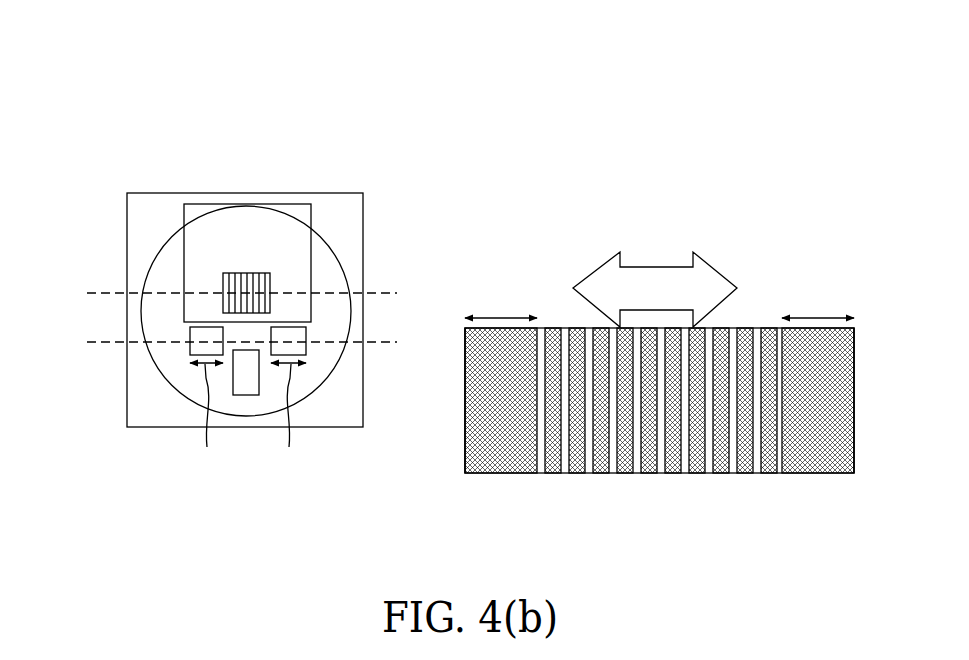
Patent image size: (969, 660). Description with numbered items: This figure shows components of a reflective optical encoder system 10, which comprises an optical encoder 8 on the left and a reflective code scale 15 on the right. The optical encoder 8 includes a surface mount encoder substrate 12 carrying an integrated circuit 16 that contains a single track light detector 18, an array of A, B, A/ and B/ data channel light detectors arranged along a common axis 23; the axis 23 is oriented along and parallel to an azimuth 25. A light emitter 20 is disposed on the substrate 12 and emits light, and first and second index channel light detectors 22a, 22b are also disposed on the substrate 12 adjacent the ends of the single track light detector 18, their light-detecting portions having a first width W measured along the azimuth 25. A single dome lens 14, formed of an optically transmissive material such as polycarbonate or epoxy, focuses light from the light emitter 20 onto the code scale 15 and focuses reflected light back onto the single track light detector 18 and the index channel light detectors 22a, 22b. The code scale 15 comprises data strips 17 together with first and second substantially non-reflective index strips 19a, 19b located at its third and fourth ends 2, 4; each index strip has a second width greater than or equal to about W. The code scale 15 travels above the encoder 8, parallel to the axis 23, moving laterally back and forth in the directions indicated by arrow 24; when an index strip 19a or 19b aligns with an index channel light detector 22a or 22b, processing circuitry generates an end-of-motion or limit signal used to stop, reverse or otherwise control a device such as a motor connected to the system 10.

The optical encoder 8 is at (150, 91).
The reflective optical encoder system 10 is at (138, 481).
The encoder substrate 12 is at (148, 207).
The dome lens 14 is at (340, 287).
The code scale 15 is at (778, 206).
The integrated circuit 16 is at (300, 211).
The data strips 17 is at (533, 487).
The single track light detector 18 is at (228, 286).
The first index strip 19a is at (498, 452).
The second index strip 19b is at (818, 449).
The third end 2 is at (465, 394).
The fourth end 4 is at (854, 396).
The light emitter 20 is at (245, 387).
The first index channel light detector 22a is at (190, 349).
The second index channel light detector 22b is at (305, 349).
The common axis 23 is at (104, 292).
The arrow 24 is at (650, 267).
The azimuth 25 is at (103, 343).